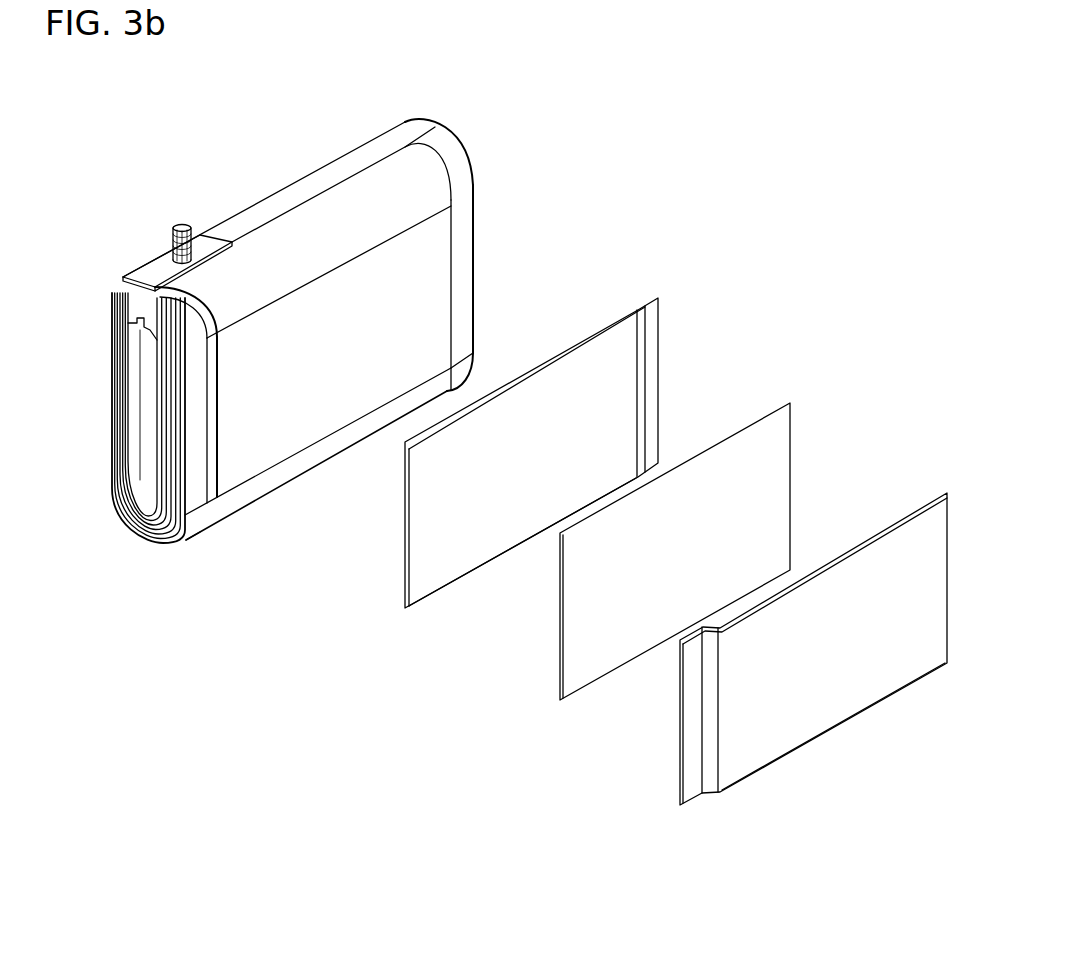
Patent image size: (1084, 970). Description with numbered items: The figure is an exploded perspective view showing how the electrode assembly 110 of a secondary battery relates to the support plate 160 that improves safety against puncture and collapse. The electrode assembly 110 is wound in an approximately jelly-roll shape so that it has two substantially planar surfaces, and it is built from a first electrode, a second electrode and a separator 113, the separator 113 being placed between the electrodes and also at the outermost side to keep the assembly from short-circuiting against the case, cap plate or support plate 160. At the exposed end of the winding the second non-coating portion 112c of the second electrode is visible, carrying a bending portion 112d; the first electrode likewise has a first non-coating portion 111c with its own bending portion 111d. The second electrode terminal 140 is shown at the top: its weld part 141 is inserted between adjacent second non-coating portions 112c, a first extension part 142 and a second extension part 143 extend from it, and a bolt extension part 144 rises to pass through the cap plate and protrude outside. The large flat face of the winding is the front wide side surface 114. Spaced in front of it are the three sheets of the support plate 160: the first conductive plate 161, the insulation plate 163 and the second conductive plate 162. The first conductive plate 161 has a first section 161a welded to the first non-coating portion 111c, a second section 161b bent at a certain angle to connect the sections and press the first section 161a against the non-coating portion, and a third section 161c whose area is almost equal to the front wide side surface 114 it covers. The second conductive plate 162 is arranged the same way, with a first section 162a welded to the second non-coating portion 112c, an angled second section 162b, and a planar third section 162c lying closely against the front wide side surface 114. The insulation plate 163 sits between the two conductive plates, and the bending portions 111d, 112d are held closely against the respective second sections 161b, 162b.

The electrode assembly 110 is at (349, 344).
The first non-coating portion 111c is at (447, 153).
The bending portion 111d is at (457, 250).
The second non-coating portion 112c is at (195, 527).
The bending portion 112d is at (212, 473).
The separator 113 is at (337, 207).
The front wide side surface 114 is at (300, 430).
The second electrode terminal 140 is at (156, 230).
The weld part 141 is at (116, 418).
The first extension part 142 is at (130, 310).
The second extension part 143 is at (153, 272).
The bolt extension part 144 is at (177, 222).
The support plate 160 is at (682, 568).
The first conductive plate 161 is at (578, 438).
The first section 161a is at (655, 318).
The second section 161b is at (642, 355).
The third section 161c is at (577, 360).
The second conductive plate 162 is at (786, 680).
The first section 162a is at (688, 780).
The second section 162b is at (710, 780).
The third section 162c is at (755, 735).
The insulation plate 163 is at (782, 458).